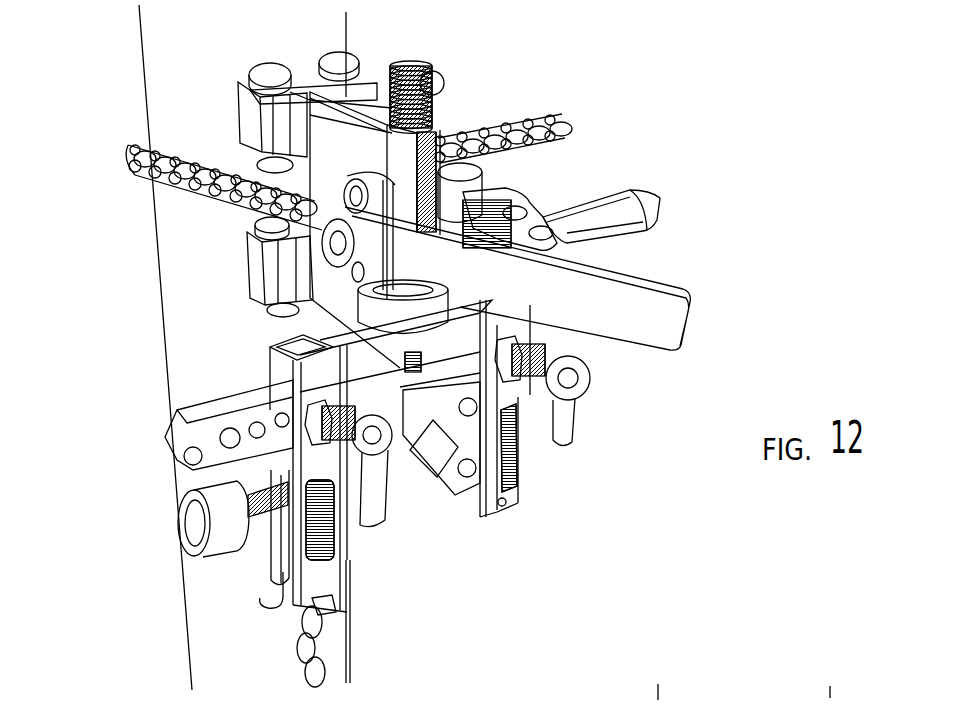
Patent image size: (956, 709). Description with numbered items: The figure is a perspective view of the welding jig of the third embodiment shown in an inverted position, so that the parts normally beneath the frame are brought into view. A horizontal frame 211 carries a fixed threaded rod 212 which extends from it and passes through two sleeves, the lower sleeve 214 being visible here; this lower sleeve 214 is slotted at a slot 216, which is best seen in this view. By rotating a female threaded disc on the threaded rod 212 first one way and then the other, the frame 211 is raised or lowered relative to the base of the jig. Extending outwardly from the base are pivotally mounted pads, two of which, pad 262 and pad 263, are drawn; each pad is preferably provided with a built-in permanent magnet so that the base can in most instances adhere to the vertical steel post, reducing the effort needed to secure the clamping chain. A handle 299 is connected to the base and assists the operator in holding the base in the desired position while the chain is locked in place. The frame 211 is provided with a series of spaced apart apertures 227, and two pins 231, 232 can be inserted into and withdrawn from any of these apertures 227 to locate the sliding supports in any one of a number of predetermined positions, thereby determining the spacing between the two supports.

The horizontal frame 211 is at (173, 440).
The threaded rod 212 is at (427, 62).
The lower sleeve 214 is at (400, 168).
The slot 216 is at (437, 135).
The spaced apart apertures 227 is at (225, 400).
The pin 231 is at (557, 447).
The pin 232 is at (370, 513).
The pivotally mounted pad 262 is at (240, 87).
The pivotally mounted pad 263 is at (247, 263).
The handle 299 is at (667, 317).